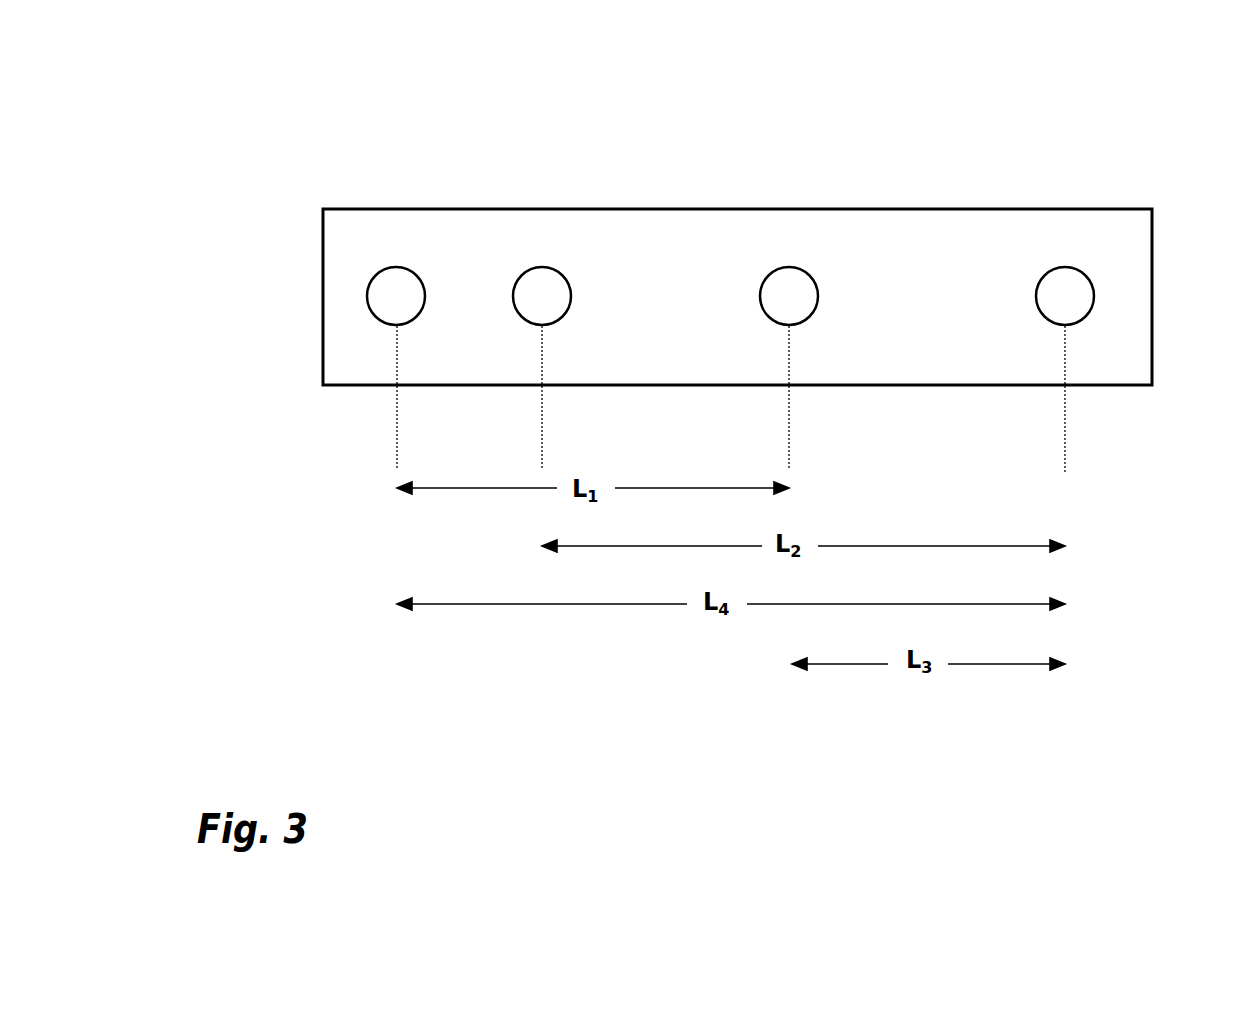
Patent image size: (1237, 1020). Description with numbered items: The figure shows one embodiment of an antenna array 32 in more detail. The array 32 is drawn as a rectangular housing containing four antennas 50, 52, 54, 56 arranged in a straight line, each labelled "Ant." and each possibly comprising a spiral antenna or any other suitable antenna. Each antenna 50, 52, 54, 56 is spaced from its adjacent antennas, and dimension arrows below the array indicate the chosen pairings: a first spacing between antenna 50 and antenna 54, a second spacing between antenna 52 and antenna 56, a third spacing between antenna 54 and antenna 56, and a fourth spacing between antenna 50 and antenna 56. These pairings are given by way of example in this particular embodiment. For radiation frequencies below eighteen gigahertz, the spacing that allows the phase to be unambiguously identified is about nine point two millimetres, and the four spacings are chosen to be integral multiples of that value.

The antenna array 32 is at (945, 173).
The antenna 50 is at (393, 292).
The antenna 52 is at (550, 292).
The antenna 54 is at (778, 292).
The antenna 56 is at (1062, 286).